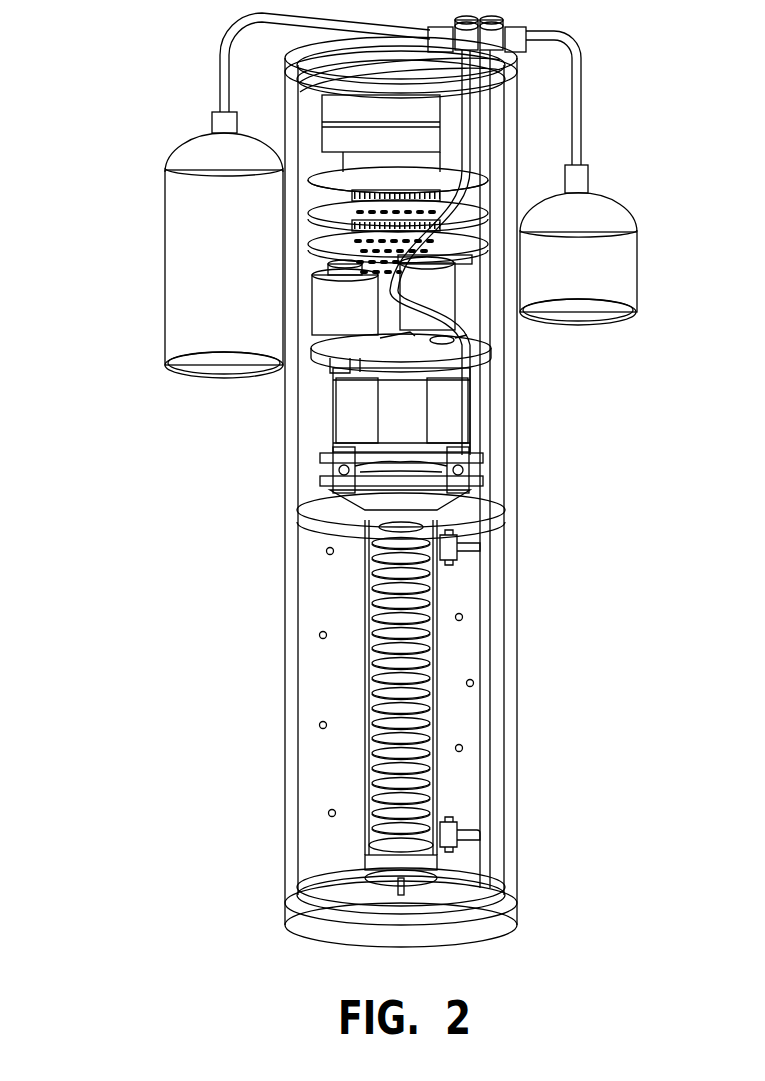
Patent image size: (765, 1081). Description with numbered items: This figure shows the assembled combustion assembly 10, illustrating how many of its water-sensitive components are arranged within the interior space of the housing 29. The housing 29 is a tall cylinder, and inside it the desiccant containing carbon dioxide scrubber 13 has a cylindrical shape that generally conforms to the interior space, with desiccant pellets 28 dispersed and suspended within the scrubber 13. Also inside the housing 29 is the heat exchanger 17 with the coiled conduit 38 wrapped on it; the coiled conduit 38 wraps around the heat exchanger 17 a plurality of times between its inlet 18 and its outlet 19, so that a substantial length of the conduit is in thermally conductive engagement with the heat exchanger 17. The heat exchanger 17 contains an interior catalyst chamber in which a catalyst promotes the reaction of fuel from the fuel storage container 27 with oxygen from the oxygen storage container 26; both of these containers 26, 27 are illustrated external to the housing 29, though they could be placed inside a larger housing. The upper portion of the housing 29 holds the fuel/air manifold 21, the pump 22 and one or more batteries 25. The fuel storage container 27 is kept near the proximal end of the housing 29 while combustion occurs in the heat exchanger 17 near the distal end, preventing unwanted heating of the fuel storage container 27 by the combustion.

The combustion assembly 10 is at (133, 591).
The desiccant containing carbon dioxide scrubber 13 is at (324, 757).
The heat exchanger 17 is at (370, 690).
The inlet 18 is at (467, 557).
The outlet 19 is at (467, 820).
The fuel/air manifold 21 is at (338, 490).
The pump 22 is at (401, 410).
The batteries 25 is at (322, 131).
The oxygen storage container 26 is at (637, 262).
The fuel storage container 27 is at (165, 287).
The desiccant pellets 28 is at (472, 683).
The housing 29 is at (294, 518).
The coiled conduit 38 is at (370, 592).